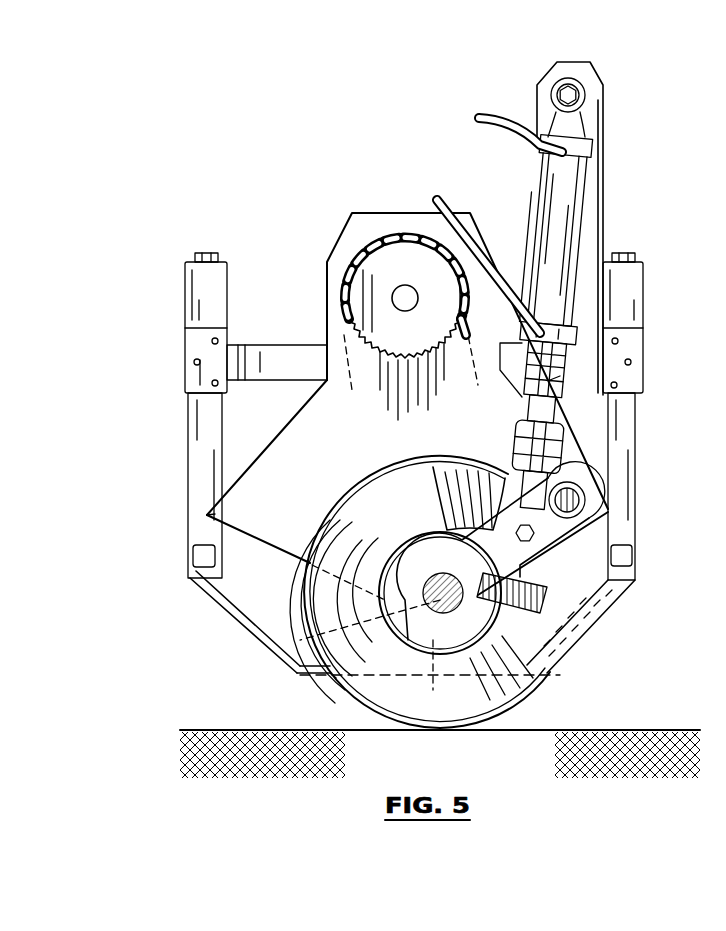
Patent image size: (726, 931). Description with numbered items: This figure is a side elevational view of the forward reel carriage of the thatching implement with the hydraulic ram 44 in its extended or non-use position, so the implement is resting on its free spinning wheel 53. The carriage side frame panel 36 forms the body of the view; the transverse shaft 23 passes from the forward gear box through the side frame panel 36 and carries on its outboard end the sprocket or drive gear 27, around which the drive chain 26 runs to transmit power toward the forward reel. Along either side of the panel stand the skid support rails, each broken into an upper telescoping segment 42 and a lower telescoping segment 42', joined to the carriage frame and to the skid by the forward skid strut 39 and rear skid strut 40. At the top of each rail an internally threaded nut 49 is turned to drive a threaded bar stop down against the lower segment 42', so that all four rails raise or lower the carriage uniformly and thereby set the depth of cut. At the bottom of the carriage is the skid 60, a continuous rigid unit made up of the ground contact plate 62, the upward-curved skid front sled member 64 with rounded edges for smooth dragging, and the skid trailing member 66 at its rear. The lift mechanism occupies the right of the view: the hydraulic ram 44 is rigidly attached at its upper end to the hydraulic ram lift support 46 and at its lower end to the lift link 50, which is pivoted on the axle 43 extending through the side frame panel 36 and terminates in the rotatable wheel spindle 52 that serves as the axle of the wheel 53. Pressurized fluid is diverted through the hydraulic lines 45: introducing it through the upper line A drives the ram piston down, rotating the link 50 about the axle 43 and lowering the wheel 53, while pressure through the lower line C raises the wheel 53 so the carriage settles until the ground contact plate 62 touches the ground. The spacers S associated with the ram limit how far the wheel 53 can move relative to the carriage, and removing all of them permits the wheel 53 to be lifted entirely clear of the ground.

The transverse shaft 23 is at (405, 285).
The drive chain 26 is at (345, 262).
The drive gear 27 is at (355, 238).
The side frame panel 36 is at (207, 515).
The forward skid strut 39 is at (280, 355).
The rear skid strut 40 is at (582, 362).
The upper skid support rail segment 42 is at (424, 300).
The lower skid support rail segment 42' is at (418, 486).
The axle 43 is at (592, 520).
The hydraulic ram 44 is at (596, 284).
The hydraulic lines 45 is at (490, 128).
The hydraulic ram lift support 46 is at (578, 90).
The internally threaded nut 49 is at (207, 252).
The lift link 50 is at (549, 551).
The wheel spindle 52 is at (478, 608).
The wheel 53 is at (425, 592).
The skid 60 is at (430, 642).
The ground contact plate 62 is at (310, 680).
The skid front sled member 64 is at (583, 638).
The skid trailing member 66 is at (252, 640).
The upper hydraulic line A is at (501, 122).
The lower hydraulic line C is at (470, 224).
The spacers S is at (550, 372).